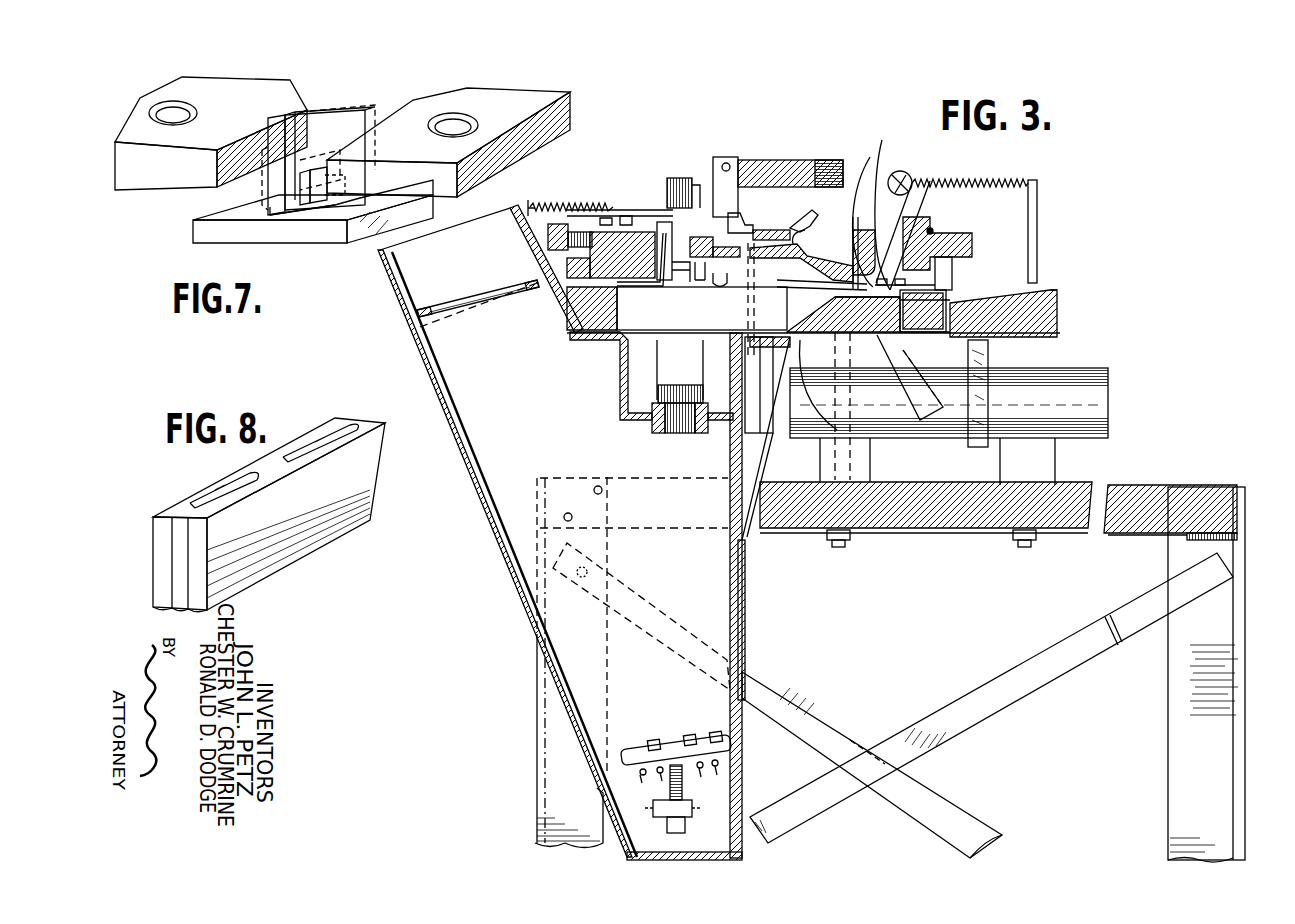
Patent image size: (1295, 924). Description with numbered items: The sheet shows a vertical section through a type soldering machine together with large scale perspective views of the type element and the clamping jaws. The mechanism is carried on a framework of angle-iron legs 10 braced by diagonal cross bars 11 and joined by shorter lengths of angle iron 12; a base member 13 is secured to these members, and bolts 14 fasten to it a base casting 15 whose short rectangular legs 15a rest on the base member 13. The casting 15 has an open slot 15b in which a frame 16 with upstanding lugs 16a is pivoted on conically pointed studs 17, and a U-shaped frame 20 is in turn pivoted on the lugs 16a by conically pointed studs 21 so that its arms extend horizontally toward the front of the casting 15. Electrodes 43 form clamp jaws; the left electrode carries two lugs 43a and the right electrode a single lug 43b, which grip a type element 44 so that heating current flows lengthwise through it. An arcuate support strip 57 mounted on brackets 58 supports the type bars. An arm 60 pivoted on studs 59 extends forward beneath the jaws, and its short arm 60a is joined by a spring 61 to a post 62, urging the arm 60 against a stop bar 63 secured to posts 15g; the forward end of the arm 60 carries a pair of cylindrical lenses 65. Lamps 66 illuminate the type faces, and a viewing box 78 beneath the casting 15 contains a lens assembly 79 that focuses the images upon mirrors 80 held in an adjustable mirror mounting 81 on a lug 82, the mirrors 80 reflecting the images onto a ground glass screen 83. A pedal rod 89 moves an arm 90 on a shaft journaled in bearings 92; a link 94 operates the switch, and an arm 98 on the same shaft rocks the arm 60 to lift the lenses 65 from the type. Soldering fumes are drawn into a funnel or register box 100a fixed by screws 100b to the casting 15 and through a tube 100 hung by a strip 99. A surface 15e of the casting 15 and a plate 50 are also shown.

In FIG. 3, the legs 10 is at (1185, 678).
In FIG. 3, the diagonal cross bars 11 is at (1000, 683).
In FIG. 3, the angle iron lengths 12 is at (928, 536).
In FIG. 3, the base member 13 is at (1133, 498).
In FIG. 3, the bolts 14 is at (841, 548).
In FIG. 3, the base casting 15 is at (1040, 322).
In FIG. 3, the rectangular legs 15a is at (857, 465).
In FIG. 3, the open slot 15b is at (1060, 276).
In FIG. 3, the housing recess 15e is at (700, 272).
In FIG. 3, the posts 15g is at (731, 285).
In FIG. 3, the frame 16 is at (938, 264).
In FIG. 3, the upstanding lugs 16a is at (942, 234).
In FIG. 3, the studs 17 is at (927, 326).
In FIG. 3, the U-shaped frame 20 is at (836, 218).
In FIG. 3, the studs 21 is at (937, 230).
In FIG. 7, the electrodes 43 is at (137, 170).
In FIG. 3, the electrodes 43 is at (672, 195).
In FIG. 7, the lugs 43a is at (303, 132).
In FIG. 7, the lug 43b is at (310, 190).
In FIG. 7, the type element 44 is at (330, 145).
In FIG. 8, the type element 44 is at (290, 520).
In FIG. 3, the type element 44 is at (687, 230).
In FIG. 3, the plate 50 is at (772, 230).
In FIG. 3, the arcuate support strip 57 is at (772, 160).
In FIG. 3, the brackets 58 is at (722, 177).
In FIG. 3, the studs 59 is at (850, 262).
In FIG. 3, the arm 60 is at (798, 282).
In FIG. 3, the short arm 60a is at (893, 172).
In FIG. 3, the spring 61 is at (996, 182).
In FIG. 3, the post 62 is at (1037, 196).
In FIG. 3, the stop bar 63 is at (730, 240).
In FIG. 7, the cylindrical lenses 65 is at (388, 215).
In FIG. 3, the lamp 66 is at (680, 366).
In FIG. 3, the viewing box 78 is at (470, 409).
In FIG. 3, the lens assembly 79 is at (672, 418).
In FIG. 3, the mirrors 80 is at (688, 745).
In FIG. 3, the mirror mounting 81 is at (722, 758).
In FIG. 3, the lug 82 is at (700, 810).
In FIG. 3, the ground glass screen 83 is at (462, 300).
In FIG. 3, the rod 89 is at (745, 585).
In FIG. 3, the arm 90 is at (810, 225).
In FIG. 3, the bearings 92 is at (938, 285).
In FIG. 3, the link 94 is at (905, 358).
In FIG. 3, the arm 98 is at (867, 214).
In FIG. 3, the strip 99 is at (985, 395).
In FIG. 3, the tube 100 is at (1083, 400).
In FIG. 3, the funnel or register box 100a is at (782, 430).
In FIG. 3, the screws 100b is at (855, 433).